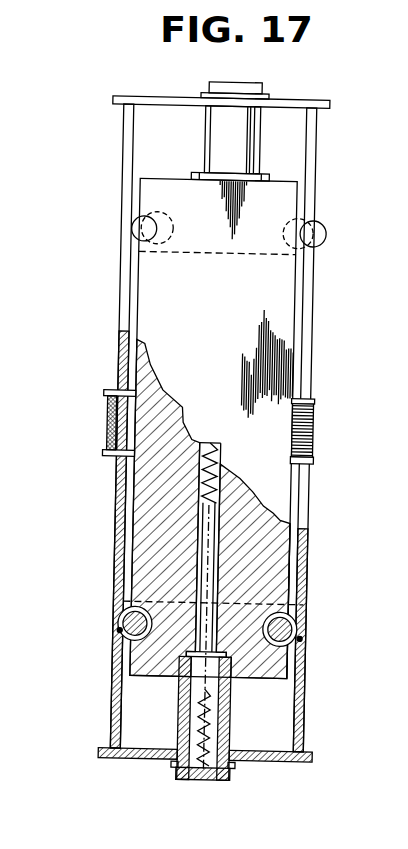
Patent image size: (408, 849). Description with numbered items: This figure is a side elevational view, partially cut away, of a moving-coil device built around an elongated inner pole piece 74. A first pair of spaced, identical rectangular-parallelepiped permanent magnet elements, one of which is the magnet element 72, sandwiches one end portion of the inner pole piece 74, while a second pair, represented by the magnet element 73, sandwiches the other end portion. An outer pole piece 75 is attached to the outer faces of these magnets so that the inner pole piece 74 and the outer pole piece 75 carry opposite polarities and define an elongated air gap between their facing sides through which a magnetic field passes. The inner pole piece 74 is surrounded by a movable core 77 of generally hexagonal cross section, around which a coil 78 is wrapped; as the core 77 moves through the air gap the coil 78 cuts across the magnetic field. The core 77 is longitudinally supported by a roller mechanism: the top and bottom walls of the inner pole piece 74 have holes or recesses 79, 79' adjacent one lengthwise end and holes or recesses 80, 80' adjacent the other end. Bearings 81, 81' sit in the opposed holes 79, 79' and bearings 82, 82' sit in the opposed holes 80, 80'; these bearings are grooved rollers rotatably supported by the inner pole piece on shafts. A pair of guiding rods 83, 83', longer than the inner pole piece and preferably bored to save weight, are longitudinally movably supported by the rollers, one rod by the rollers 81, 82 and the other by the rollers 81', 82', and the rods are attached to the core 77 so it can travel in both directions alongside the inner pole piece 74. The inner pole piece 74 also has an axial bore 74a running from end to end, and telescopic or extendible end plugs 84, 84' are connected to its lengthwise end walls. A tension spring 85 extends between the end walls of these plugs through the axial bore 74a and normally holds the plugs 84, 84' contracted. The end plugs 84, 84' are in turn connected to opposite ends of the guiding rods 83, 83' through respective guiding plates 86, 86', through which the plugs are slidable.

The permanent magnet element 72 is at (189, 255).
The permanent magnet element 73 is at (176, 603).
The inner pole piece 74 is at (292, 566).
The axial bore 74a is at (218, 546).
The outer pole piece 75 is at (214, 371).
The movable core 77 is at (316, 424).
The coil 78 is at (107, 418).
The hole or recess 79 is at (126, 217).
The hole or recess 79' is at (322, 223).
The hole or recess 80 is at (108, 617).
The hole or recess 80' is at (307, 626).
The bearing 81 is at (118, 235).
The bearing 81' is at (330, 243).
The bearing 82 is at (92, 650).
The bearing 82' is at (323, 659).
The guiding rod 83 is at (100, 425).
The guiding rod 83' is at (331, 430).
The telescopic end plug 84 is at (240, 160).
The telescopic end plug 84' is at (227, 718).
The tension spring 85 is at (221, 471).
The guiding plate 86 is at (222, 85).
The guiding plate 86' is at (204, 777).